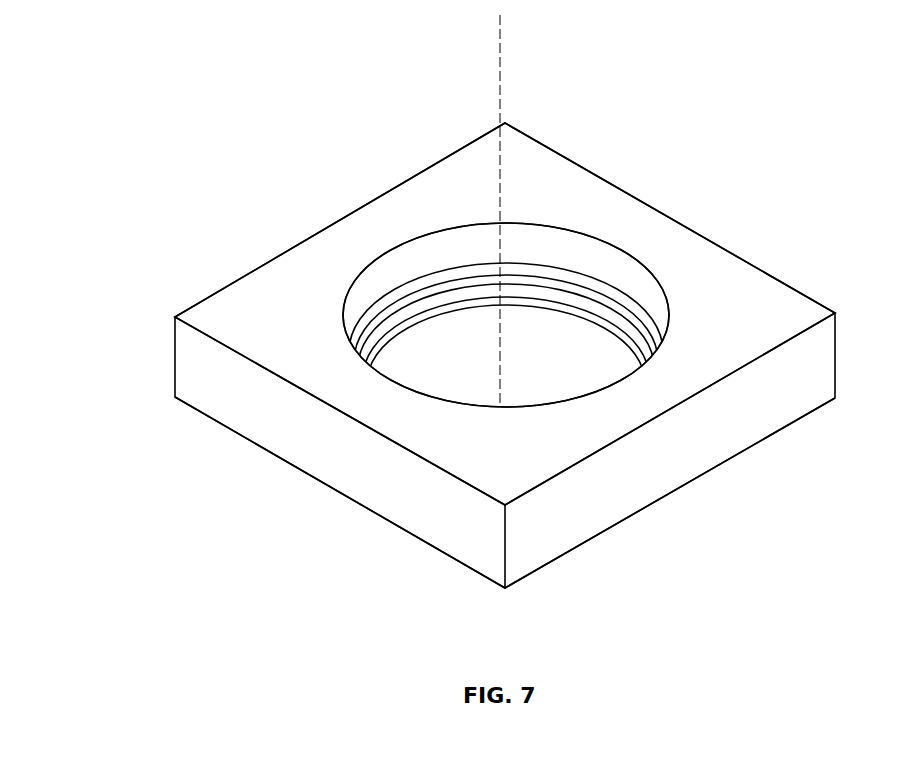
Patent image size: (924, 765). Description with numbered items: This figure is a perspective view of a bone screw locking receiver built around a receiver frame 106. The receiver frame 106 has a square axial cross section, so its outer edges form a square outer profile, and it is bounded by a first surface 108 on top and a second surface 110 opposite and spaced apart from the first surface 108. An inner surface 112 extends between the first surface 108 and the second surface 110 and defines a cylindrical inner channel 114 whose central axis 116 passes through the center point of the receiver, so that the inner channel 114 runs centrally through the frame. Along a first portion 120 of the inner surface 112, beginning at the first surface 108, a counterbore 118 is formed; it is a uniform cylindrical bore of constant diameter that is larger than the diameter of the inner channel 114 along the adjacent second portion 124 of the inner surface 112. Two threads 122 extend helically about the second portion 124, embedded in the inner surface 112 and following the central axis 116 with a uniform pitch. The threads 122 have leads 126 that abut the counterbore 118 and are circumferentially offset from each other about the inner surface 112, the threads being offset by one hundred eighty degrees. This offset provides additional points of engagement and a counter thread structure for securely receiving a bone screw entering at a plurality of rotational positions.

The receiver frame 106 is at (772, 308).
The first surface 108 is at (452, 172).
The second surface 110 is at (367, 512).
The inner surface 112 is at (410, 262).
The inner channel 114 is at (565, 347).
The central axis 116 is at (497, 100).
The counterbore 118 is at (633, 287).
The first portion 120 is at (447, 232).
The threads 122 is at (445, 293).
The second portion 124 is at (372, 320).
The leads 126 is at (378, 322).